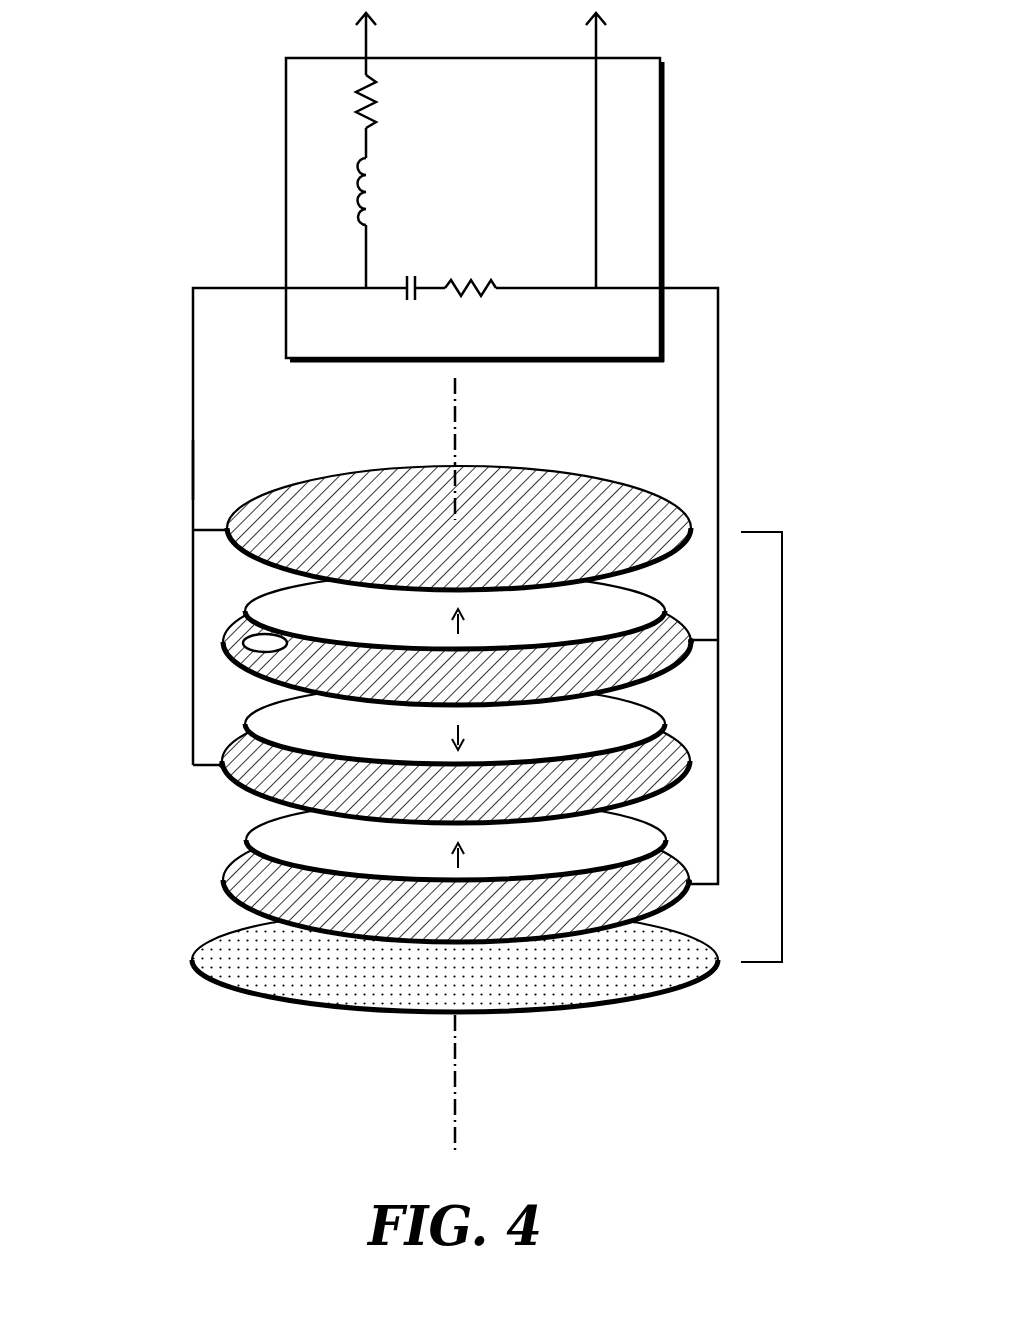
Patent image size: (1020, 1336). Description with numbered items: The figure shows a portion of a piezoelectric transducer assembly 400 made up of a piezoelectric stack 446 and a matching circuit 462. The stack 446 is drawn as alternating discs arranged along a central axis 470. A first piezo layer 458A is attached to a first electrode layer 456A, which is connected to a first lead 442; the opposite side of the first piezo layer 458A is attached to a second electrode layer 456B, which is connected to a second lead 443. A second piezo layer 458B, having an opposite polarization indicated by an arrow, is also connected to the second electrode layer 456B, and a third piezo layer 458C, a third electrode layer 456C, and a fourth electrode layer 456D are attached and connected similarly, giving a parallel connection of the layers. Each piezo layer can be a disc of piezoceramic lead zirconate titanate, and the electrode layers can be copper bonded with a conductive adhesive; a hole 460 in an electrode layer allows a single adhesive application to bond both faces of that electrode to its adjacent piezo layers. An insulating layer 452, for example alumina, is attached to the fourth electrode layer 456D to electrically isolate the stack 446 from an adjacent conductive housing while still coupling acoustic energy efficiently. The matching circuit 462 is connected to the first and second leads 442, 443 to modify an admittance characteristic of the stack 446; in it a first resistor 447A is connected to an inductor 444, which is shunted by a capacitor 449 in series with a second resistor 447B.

The piezoelectric transducer assembly 400 is at (700, 150).
The matching circuit 462 is at (287, 150).
The first resistor 447A is at (373, 117).
The inductor 444 is at (364, 162).
The capacitor 449 is at (406, 276).
The second resistor 447B is at (496, 288).
The second lead 443 is at (718, 443).
The first lead 442 is at (193, 475).
The central axis 470 is at (536, 468).
The first electrode layer 456A is at (193, 513).
The first piezo layer 458A is at (245, 595).
The hole 460 is at (248, 642).
The second electrode layer 456B is at (225, 658).
The second piezo layer 458B is at (245, 705).
The third electrode layer 456C is at (193, 748).
The third piezo layer 458C is at (247, 828).
The fourth electrode layer 456D is at (223, 882).
The piezoelectric stack 446 is at (782, 755).
The insulating layer 452 is at (195, 962).